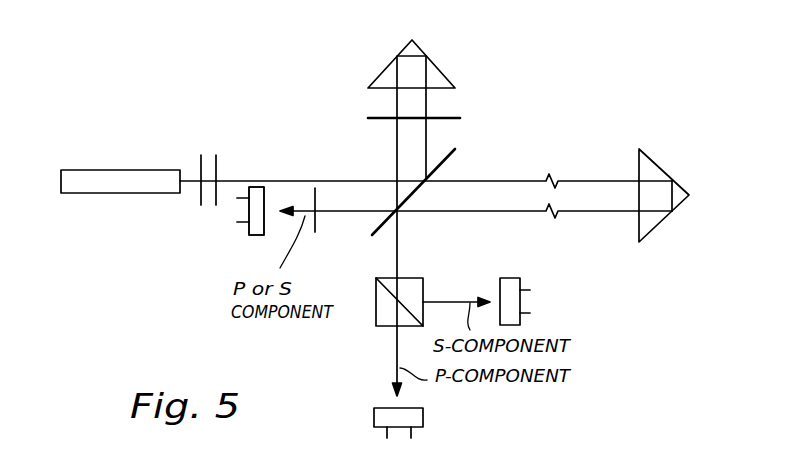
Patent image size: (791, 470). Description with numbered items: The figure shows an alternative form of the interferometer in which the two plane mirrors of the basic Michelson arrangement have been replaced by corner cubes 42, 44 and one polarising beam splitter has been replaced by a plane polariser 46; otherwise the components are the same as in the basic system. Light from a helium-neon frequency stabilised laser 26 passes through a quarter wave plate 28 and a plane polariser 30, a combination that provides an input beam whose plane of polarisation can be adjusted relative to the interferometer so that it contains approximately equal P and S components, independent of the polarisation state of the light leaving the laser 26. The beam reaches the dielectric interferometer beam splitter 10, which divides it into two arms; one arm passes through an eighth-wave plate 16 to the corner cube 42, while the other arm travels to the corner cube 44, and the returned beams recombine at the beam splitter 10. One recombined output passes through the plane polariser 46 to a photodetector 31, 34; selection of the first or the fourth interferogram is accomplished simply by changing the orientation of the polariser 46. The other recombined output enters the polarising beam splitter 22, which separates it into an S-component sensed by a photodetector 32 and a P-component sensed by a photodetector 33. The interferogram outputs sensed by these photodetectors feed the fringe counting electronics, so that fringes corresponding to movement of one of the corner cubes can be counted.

The dielectric interferometer beam splitter 10 is at (380, 226).
The eighth-wave plate 16 is at (378, 117).
The polarising beam splitter 22 is at (376, 292).
The helium-neon frequency stabilised laser 26 is at (93, 169).
The quarter wave plate 28 is at (199, 160).
The plane polariser 30 is at (217, 160).
The photodetector 31 is at (253, 237).
The photodetector 34 is at (256, 211).
The photodetector 32 is at (512, 278).
The photodetector 33 is at (374, 418).
The corner cube 42 is at (418, 46).
The corner cube 44 is at (657, 164).
The plane polariser 46 is at (318, 196).